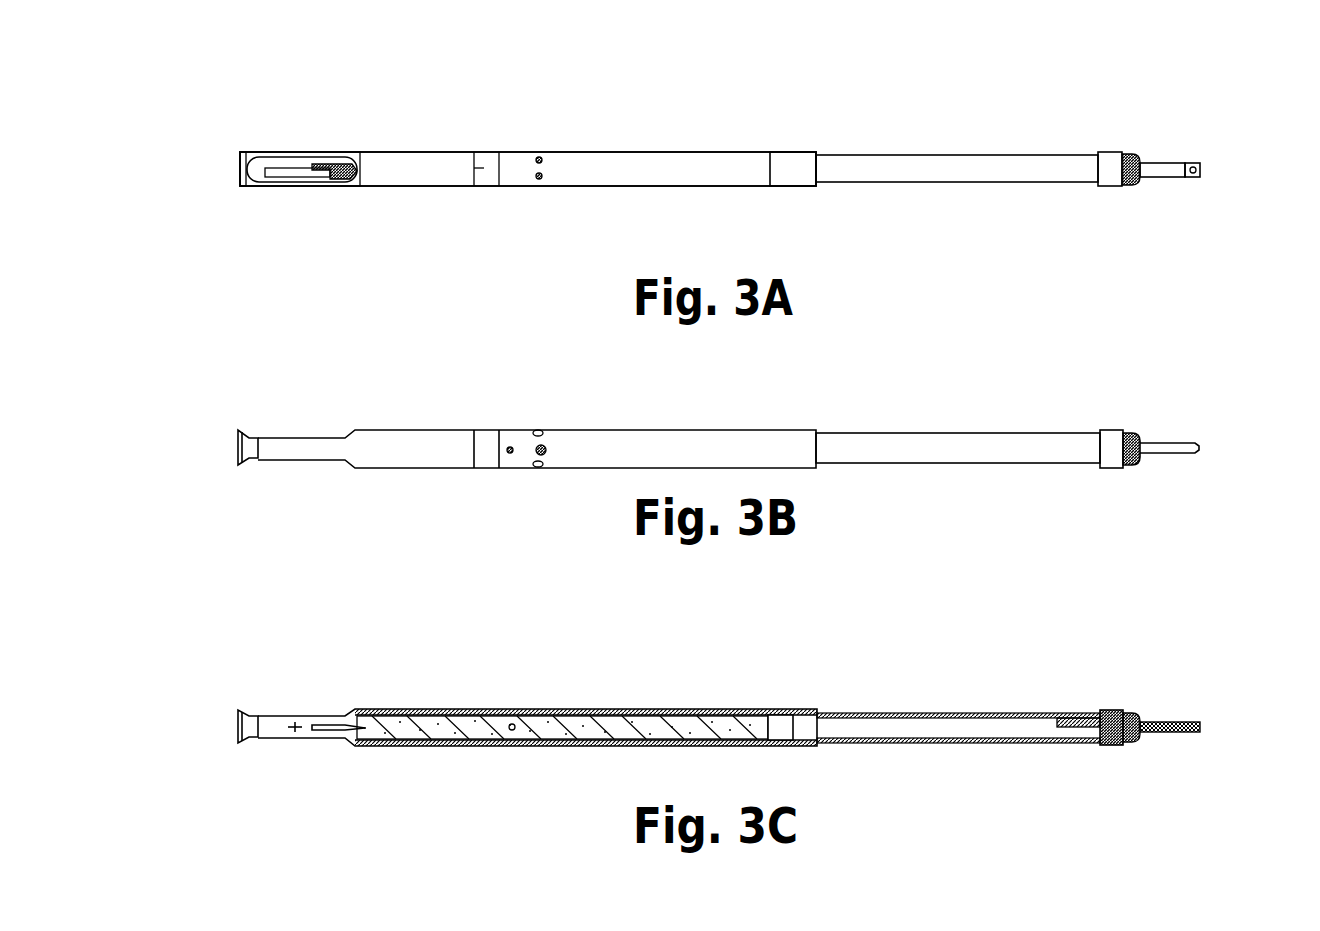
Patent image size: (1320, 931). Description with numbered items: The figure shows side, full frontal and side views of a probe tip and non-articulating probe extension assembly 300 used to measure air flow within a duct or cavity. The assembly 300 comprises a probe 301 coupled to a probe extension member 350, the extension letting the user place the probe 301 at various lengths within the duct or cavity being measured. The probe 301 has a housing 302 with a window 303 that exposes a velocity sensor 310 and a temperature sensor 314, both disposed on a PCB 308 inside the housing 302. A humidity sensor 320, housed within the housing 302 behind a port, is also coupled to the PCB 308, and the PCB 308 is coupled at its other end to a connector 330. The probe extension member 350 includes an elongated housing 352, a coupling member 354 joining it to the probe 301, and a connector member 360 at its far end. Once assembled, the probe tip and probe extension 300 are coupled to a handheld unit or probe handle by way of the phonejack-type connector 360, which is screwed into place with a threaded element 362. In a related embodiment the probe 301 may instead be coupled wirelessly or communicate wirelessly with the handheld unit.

In FIG. 3A, the probe tip and non-articulating probe extension assembly 300 is at (120, 40).
In FIG. 3A, the probe 301 is at (236, 148).
In FIG. 3A, the housing 302 is at (240, 185).
In FIG. 3A, the window 303 is at (247, 152).
In FIG. 3A, the PCB 308 is at (322, 156).
In FIG. 3C, the PCB 308 is at (475, 727).
In FIG. 3A, the velocity sensor 310 is at (278, 150).
In FIG. 3A, the temperature sensor 314 is at (340, 182).
In FIG. 3A, the humidity sensor 320 is at (537, 205).
In FIG. 3B, the humidity sensor 320 is at (540, 492).
In FIG. 3C, the connector 330 is at (688, 712).
In FIG. 3A, the probe extension member 350 is at (1205, 213).
In FIG. 3C, the probe extension member 350 is at (1205, 757).
In FIG. 3C, the housing 352 is at (993, 713).
In FIG. 3A, the coupling member 354 is at (803, 152).
In FIG. 3C, the coupling member 354 is at (805, 710).
In FIG. 3A, the connector member 360 is at (1200, 170).
In FIG. 3C, the connector member 360 is at (1200, 727).
In FIG. 3A, the threaded element 362 is at (1136, 155).
In FIG. 3C, the threaded element 362 is at (1138, 712).